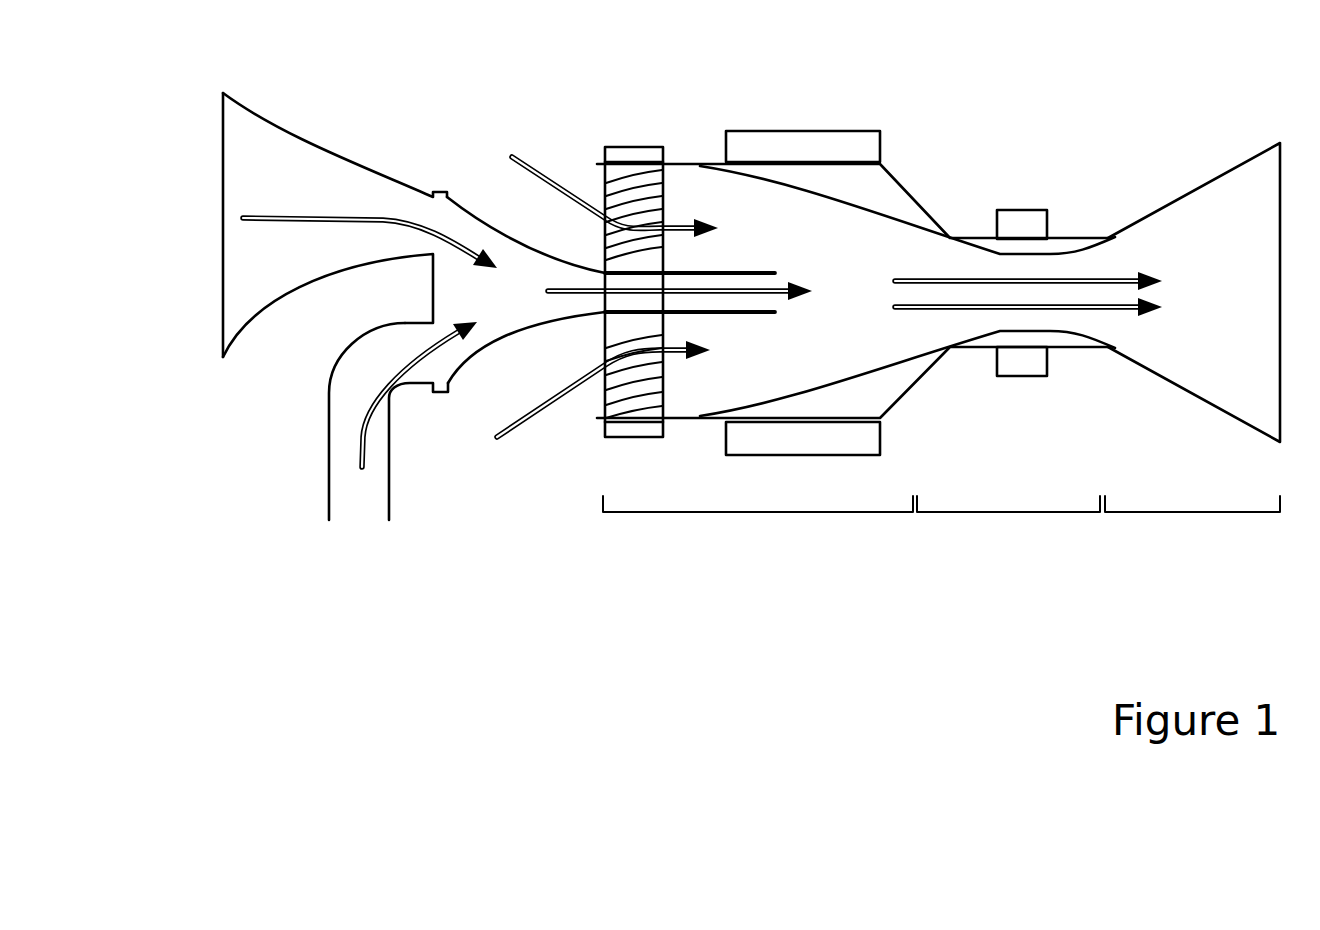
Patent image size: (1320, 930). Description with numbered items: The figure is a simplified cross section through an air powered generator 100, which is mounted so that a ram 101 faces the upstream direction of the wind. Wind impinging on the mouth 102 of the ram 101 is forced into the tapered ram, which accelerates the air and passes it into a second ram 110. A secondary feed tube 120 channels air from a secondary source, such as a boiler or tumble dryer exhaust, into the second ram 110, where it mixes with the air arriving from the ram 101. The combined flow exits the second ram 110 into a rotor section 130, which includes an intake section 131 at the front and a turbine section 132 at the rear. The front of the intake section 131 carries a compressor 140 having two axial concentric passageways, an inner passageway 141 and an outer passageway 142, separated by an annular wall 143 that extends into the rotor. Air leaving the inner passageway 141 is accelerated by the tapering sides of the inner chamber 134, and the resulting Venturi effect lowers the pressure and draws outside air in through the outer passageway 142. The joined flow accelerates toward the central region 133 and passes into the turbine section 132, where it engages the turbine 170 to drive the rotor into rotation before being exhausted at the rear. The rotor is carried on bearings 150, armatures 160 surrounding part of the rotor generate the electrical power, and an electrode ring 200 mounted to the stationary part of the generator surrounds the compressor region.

The air powered generator 100 is at (580, 659).
The ram 101 is at (293, 148).
The mouth 102 is at (222, 185).
The second ram 110 is at (500, 350).
The secondary feed tube 120 is at (328, 480).
The rotor section 130 is at (915, 405).
The intake section 131 is at (750, 512).
The turbine section 132 is at (1190, 512).
The central region 133 is at (990, 512).
The inner chamber 134 is at (880, 247).
The compressor 140 is at (588, 170).
The inner passageway 141 is at (575, 278).
The outer passageway 142 is at (585, 410).
The annular wall 143 is at (612, 270).
The bearings 150 is at (1015, 210).
The armatures 160 is at (793, 131).
The turbine 170 is at (1190, 197).
The electrode ring 200 is at (622, 147).